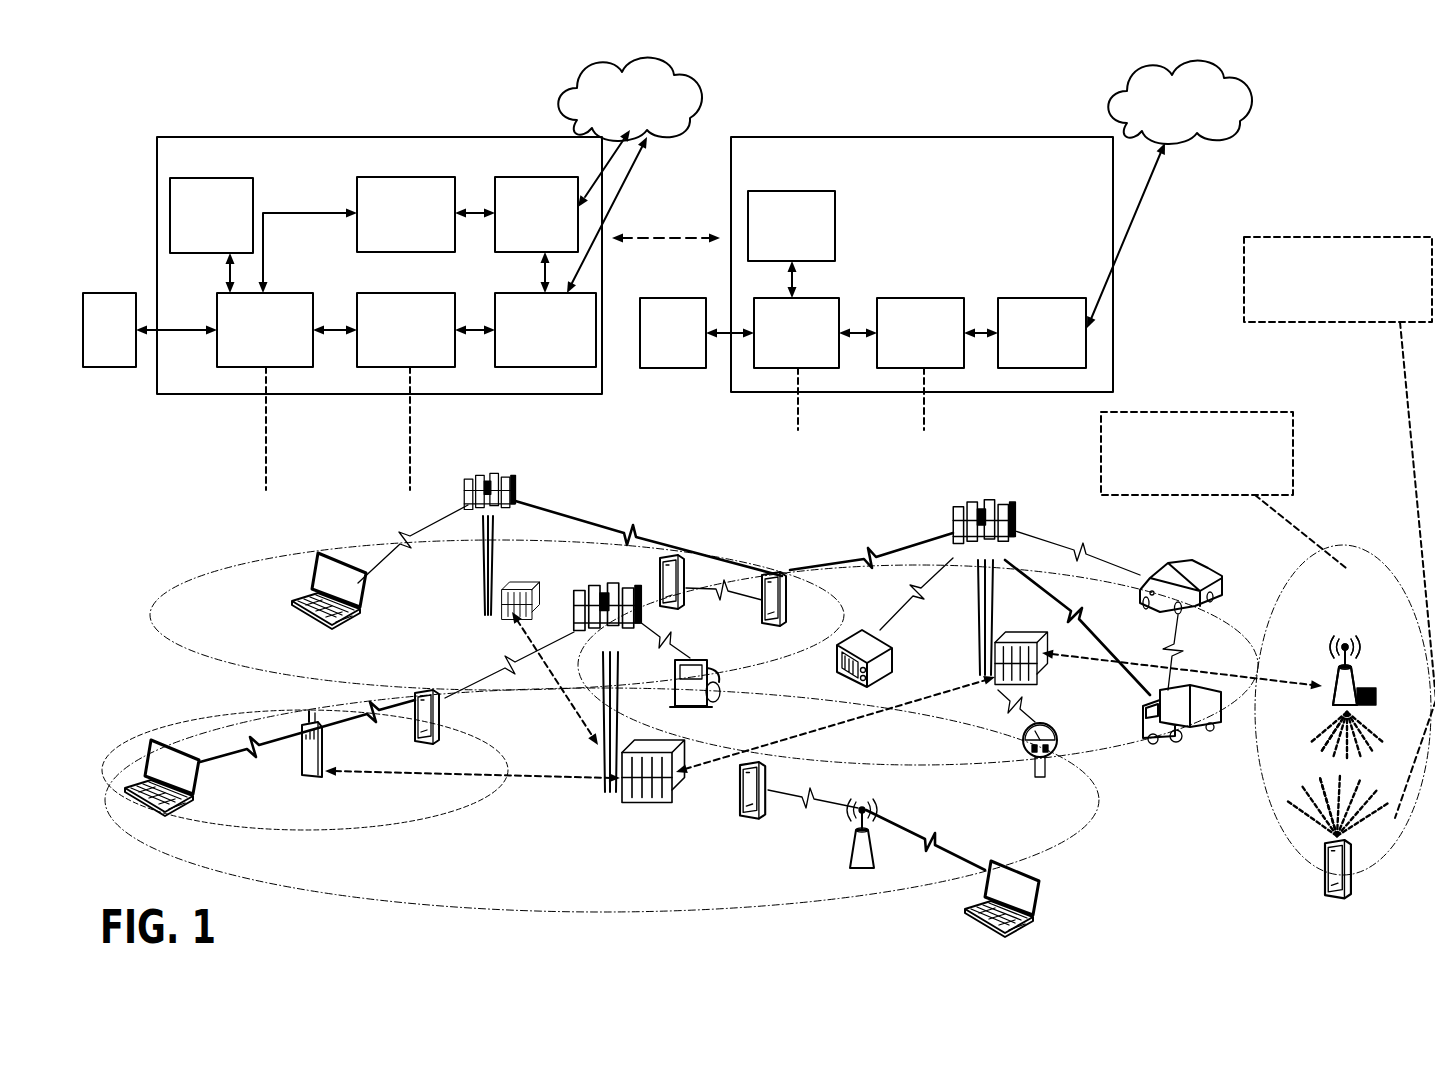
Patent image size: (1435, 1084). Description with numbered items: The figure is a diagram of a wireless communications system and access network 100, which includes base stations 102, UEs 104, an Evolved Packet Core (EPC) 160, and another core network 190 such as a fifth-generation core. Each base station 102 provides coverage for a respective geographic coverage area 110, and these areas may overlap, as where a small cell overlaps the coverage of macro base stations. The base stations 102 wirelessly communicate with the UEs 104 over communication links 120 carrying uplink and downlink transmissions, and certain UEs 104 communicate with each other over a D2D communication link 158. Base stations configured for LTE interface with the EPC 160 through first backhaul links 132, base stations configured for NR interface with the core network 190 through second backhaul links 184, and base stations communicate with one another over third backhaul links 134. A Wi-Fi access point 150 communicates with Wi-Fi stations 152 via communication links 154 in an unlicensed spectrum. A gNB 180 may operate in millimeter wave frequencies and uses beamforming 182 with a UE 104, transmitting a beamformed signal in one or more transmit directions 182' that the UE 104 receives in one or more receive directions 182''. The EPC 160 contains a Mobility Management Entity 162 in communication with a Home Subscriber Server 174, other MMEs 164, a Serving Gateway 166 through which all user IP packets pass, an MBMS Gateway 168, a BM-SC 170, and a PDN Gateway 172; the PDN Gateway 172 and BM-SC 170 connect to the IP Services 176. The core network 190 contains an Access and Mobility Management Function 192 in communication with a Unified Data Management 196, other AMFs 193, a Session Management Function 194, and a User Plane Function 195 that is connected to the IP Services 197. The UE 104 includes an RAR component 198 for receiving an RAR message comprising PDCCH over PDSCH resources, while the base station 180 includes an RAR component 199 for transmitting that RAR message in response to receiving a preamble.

The wireless communications system and access network 100 is at (150, 114).
The base station 102 is at (480, 588).
The UE 104 is at (344, 626).
The geographic coverage area 110 is at (205, 664).
The communication link 120 is at (402, 532).
The first backhaul link 132 is at (268, 396).
The third backhaul link 134 is at (560, 700).
The Wi-Fi access point 150 is at (862, 872).
The Wi-Fi station 152 is at (742, 792).
The communication link 154 is at (808, 790).
The D2D communication link 158 is at (736, 596).
The Evolved Packet Core 160 is at (282, 188).
The Mobility Management Entity 162 is at (284, 291).
The other MMEs 164 is at (198, 178).
The Serving Gateway 166 is at (426, 291).
The MBMS Gateway 168 is at (400, 177).
The Broadcast Multicast Service Center 170 is at (535, 177).
The PDN Gateway 172 is at (540, 290).
The Home Subscriber Server 174 is at (114, 293).
The IP Services 176 is at (702, 103).
The gNB 180 is at (1345, 670).
The beamforming 182 is at (1347, 783).
The transmit directions 182' is at (1334, 732).
The receive directions 182'' is at (1328, 807).
The second backhaul link 184 is at (800, 396).
The core network 190 is at (896, 220).
The Access and Mobility Management Function 192 is at (814, 298).
The other AMFs 193 is at (794, 191).
The Session Management Function 194 is at (944, 298).
The User Plane Function 195 is at (1070, 294).
The Unified Data Management 196 is at (686, 298).
The IP Services 197 is at (1248, 96).
The RAR component 198 is at (1355, 235).
The RAR component 199 is at (1213, 410).